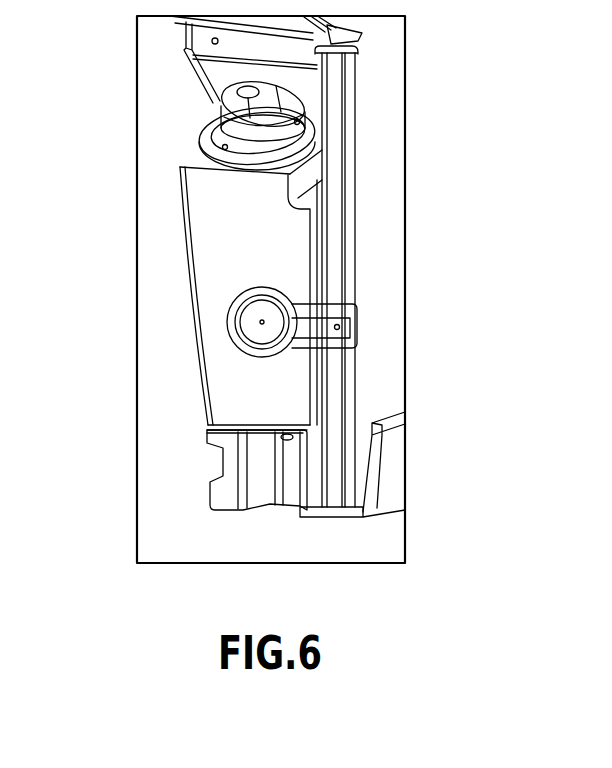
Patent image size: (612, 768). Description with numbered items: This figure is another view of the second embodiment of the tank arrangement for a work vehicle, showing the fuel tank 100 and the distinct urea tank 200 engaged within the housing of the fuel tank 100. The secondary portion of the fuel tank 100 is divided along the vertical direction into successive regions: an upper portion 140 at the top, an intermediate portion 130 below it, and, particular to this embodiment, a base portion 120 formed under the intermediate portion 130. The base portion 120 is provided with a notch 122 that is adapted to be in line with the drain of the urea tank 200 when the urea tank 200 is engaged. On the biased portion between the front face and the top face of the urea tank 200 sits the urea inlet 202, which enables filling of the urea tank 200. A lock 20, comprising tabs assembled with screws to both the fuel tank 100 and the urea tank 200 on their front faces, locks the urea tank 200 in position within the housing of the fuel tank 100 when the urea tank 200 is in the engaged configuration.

The lock 20 is at (300, 325).
The fuel tank 100 is at (213, 67).
The base portion 120 is at (200, 425).
The notch 122 is at (258, 478).
The intermediate portion 130 is at (445, 133).
The upper portion 140 is at (445, 23).
The urea tank 200 is at (227, 233).
The urea inlet 202 is at (195, 123).